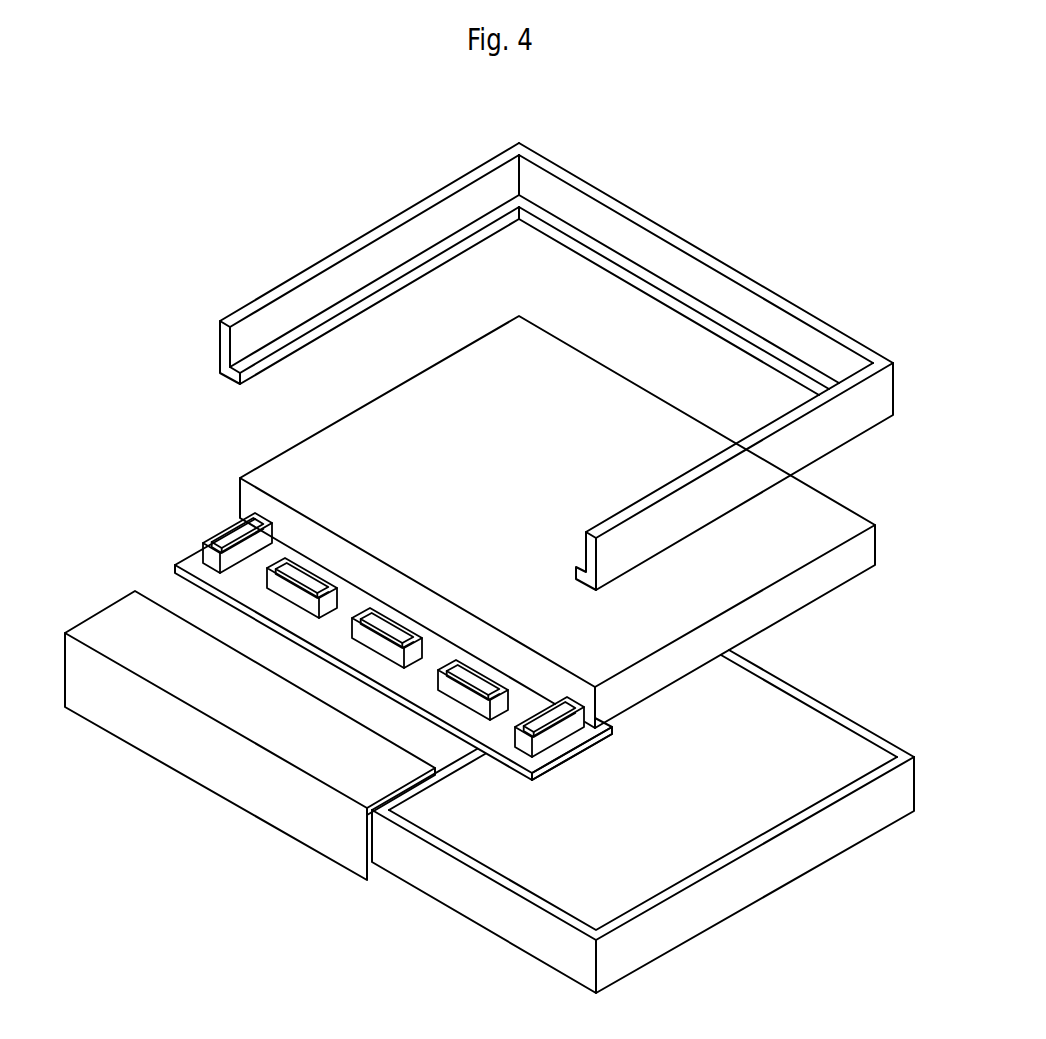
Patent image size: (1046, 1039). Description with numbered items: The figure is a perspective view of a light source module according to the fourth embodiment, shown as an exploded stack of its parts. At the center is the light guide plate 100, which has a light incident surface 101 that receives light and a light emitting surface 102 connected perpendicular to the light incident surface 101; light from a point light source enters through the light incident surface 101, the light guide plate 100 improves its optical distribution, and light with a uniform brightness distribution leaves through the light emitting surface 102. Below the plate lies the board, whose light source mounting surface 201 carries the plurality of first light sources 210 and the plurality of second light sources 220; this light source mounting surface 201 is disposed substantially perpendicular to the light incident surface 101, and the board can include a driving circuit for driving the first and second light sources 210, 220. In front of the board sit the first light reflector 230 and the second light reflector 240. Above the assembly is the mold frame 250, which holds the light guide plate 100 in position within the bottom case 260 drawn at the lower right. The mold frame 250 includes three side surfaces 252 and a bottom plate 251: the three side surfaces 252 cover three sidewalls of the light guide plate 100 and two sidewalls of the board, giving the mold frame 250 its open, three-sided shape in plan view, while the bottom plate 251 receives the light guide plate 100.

The light guide plate 100 is at (551, 522).
The light incident surface 101 is at (255, 500).
The light emitting surface 102 is at (822, 505).
The light source mounting surface 201 is at (538, 753).
The first light sources 210 is at (481, 722).
The second light sources 220 is at (197, 531).
The first light reflector 230 is at (185, 760).
The second light reflector 240 is at (107, 622).
The mold frame 250 is at (556, 364).
The bottom plate 251 is at (440, 243).
The side surfaces 252 is at (820, 352).
The bottom case 260 is at (787, 855).